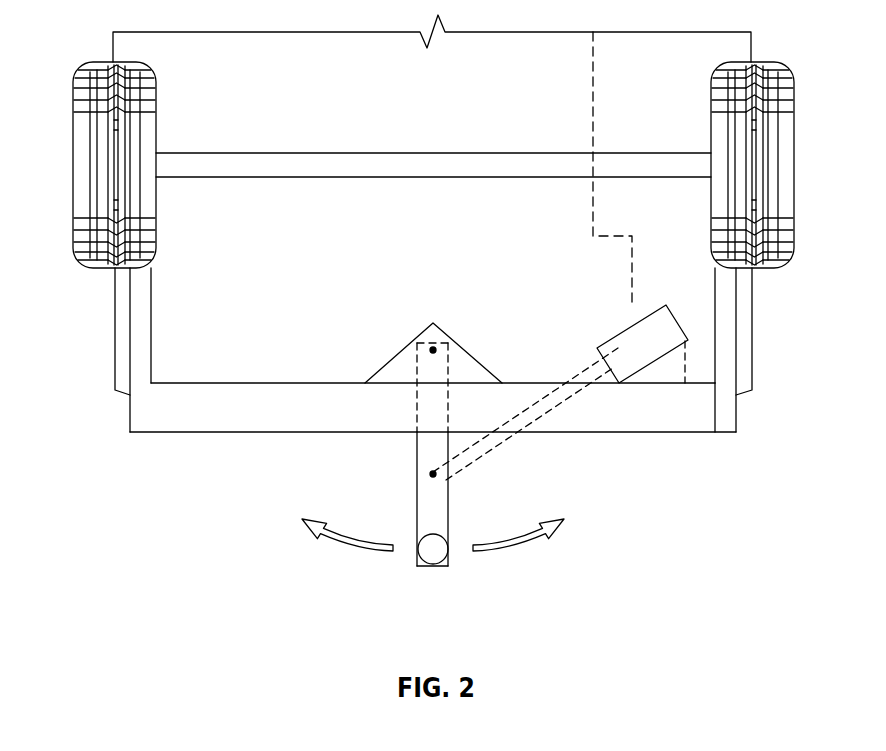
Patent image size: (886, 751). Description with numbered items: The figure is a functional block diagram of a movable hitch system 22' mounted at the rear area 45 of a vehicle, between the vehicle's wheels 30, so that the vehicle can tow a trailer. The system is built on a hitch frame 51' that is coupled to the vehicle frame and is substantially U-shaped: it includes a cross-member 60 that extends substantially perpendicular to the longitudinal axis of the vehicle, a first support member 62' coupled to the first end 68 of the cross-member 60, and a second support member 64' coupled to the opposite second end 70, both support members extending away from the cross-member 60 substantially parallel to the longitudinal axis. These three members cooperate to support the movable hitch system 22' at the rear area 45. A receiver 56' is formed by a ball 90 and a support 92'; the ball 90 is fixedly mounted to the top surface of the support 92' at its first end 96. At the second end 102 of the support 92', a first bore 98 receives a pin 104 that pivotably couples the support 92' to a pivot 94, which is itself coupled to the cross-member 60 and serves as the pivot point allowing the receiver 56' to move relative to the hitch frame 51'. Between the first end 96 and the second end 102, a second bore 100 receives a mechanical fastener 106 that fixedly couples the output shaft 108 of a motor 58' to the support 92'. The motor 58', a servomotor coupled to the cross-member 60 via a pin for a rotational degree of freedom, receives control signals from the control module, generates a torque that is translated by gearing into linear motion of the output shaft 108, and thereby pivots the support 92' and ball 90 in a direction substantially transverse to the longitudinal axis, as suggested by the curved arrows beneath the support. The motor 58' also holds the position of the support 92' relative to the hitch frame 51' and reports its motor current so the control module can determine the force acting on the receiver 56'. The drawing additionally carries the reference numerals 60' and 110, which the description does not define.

The movable hitch system 22' is at (433, 325).
The wheels 30 is at (73, 171).
The rear area 45 is at (752, 293).
The hitch frame 51' is at (464, 416).
The receiver 56' is at (468, 462).
The motor 58' is at (644, 168).
The cross-member 60 is at (435, 382).
The cross member top 60' is at (475, 364).
The first support member 62' is at (103, 350).
The second support member 64' is at (760, 350).
The first end 68 is at (190, 410).
The second end 70 is at (715, 413).
The ball 90 is at (445, 560).
The support 92' is at (472, 499).
The pivot 94 is at (386, 320).
The first end 96 is at (435, 567).
The first bore 98 is at (438, 350).
The second bore 100 is at (430, 472).
The second end 102 is at (450, 370).
The pin 104 is at (434, 348).
The mechanical fastener 106 is at (394, 477).
The output shaft 108 is at (512, 437).
The actuator housing 110 is at (670, 368).